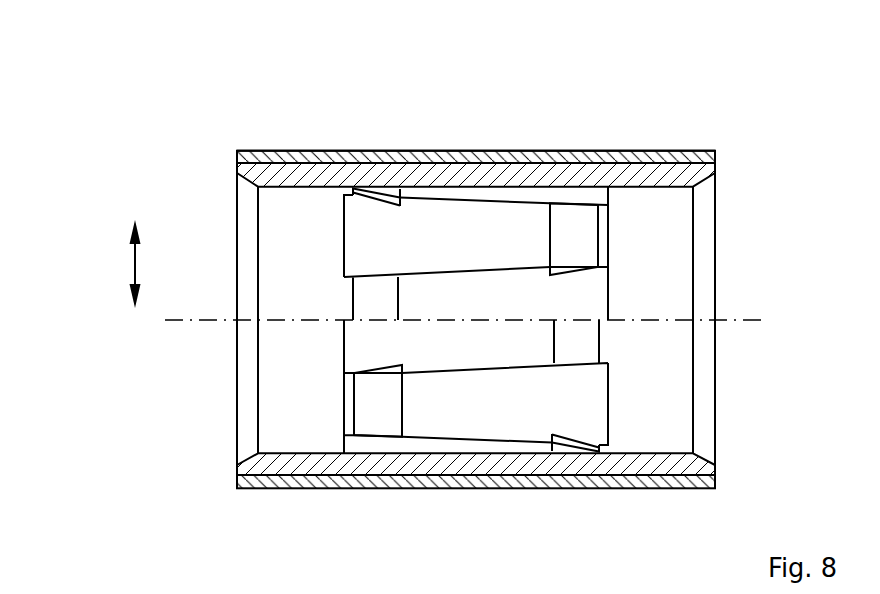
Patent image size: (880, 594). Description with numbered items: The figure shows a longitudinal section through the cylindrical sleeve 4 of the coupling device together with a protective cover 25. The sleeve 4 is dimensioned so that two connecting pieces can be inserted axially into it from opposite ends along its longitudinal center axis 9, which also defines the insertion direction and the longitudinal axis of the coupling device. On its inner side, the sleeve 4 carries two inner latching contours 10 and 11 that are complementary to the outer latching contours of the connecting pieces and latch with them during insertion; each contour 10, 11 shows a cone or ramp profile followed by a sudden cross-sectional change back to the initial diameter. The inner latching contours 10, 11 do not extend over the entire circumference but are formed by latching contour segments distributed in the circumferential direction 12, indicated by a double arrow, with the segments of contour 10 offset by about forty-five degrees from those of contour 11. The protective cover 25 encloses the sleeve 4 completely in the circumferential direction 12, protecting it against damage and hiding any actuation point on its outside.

The sleeve 4 is at (323, 452).
The protective cover 25 is at (283, 157).
The longitudinal center axis 9 is at (192, 318).
The circumferential direction 12 is at (133, 262).
The inner latching contour 10 is at (385, 190).
The inner latching contour 11 is at (570, 225).